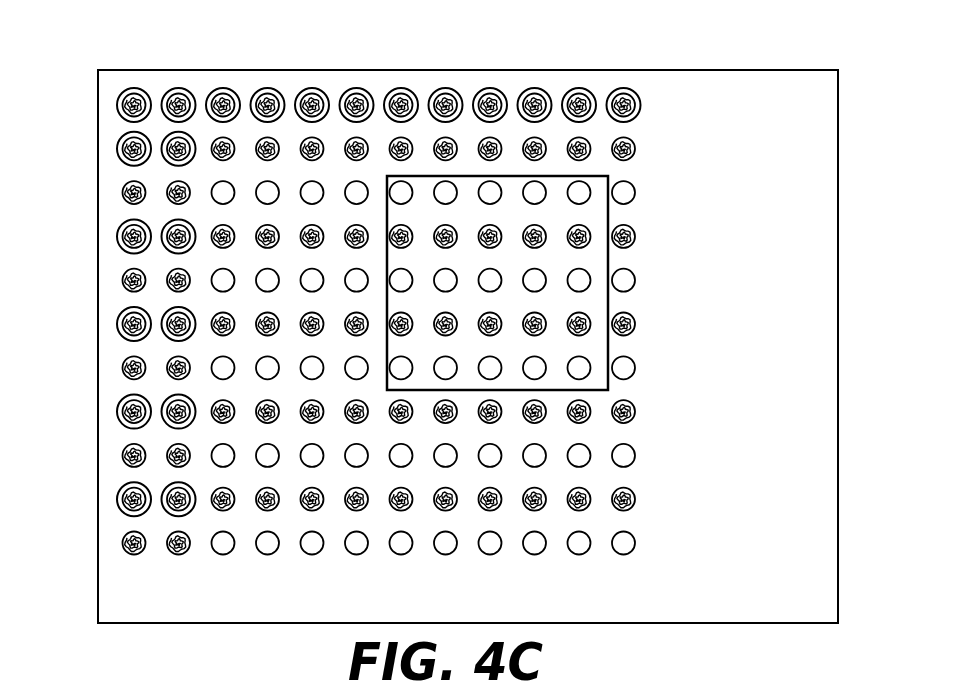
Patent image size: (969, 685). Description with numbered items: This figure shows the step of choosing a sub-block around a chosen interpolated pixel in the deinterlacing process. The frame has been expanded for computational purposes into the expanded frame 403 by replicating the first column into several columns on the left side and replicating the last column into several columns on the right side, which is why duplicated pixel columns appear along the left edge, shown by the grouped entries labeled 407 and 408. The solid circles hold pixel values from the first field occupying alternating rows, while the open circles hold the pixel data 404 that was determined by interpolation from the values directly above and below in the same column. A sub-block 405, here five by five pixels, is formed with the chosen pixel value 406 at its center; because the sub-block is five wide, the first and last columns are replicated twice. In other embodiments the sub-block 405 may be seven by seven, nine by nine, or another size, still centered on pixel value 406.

The frame 403 is at (229, 137).
The pixel data 404 is at (275, 202).
The sub-block 405 is at (610, 213).
The pixel value 406 is at (497, 272).
The solder bump 407 is at (190, 137).
The populated pad 408 is at (131, 182).